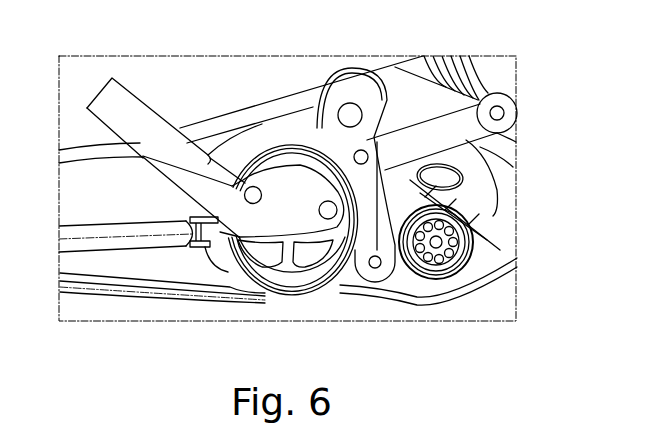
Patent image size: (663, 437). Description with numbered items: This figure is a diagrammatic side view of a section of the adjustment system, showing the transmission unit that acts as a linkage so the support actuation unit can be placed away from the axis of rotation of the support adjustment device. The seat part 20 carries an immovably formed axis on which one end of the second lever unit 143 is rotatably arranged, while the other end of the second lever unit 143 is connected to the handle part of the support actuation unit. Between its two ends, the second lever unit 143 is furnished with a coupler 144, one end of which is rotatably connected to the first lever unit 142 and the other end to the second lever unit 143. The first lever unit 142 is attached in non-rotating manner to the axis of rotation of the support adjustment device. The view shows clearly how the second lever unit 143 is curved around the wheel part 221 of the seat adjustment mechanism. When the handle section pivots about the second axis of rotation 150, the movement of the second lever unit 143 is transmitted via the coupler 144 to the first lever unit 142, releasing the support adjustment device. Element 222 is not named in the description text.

The seat part 20 is at (116, 279).
The first lever unit 142 is at (518, 85).
The second lever unit 143 is at (275, 135).
The coupler 144 is at (468, 143).
The second axis of rotation 150 is at (379, 280).
The wheel part 221 is at (299, 296).
The actuating handle 222 is at (142, 91).